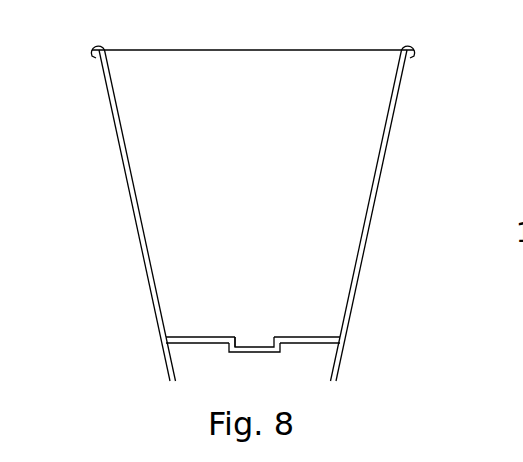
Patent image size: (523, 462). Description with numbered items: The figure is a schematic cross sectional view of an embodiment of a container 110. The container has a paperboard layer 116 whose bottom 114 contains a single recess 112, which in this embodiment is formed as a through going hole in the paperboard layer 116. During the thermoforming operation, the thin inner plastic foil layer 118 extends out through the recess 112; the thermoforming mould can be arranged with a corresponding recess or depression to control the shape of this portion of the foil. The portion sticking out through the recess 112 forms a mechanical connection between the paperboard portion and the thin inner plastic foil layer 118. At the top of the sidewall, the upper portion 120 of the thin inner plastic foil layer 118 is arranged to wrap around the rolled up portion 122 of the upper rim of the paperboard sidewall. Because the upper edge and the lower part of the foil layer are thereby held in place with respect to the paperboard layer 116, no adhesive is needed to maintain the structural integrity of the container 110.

The container 110 is at (413, 157).
The recess 112 is at (235, 338).
The bottom 114 is at (183, 343).
The paperboard layer 116 is at (127, 195).
The thin inner plastic foil layer 118 is at (257, 350).
The upper portion of the thin inner plastic foil layer 120 is at (430, 42).
The rolled up portion 122 is at (86, 48).